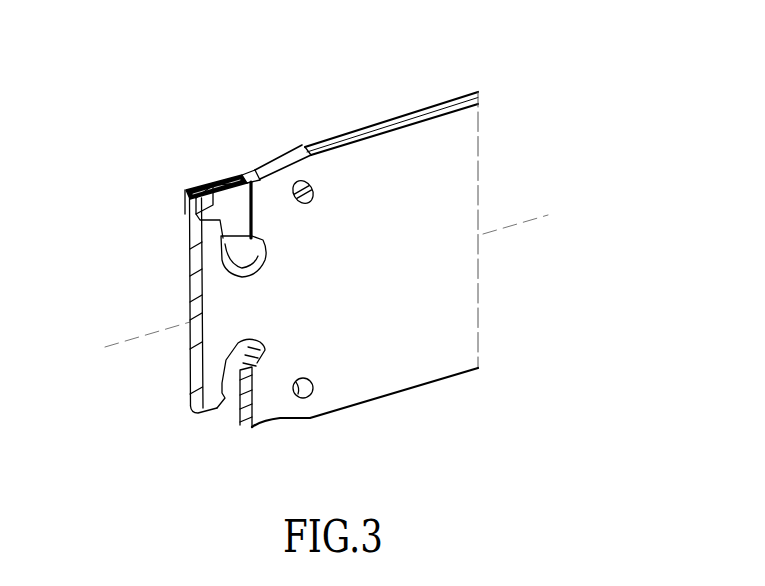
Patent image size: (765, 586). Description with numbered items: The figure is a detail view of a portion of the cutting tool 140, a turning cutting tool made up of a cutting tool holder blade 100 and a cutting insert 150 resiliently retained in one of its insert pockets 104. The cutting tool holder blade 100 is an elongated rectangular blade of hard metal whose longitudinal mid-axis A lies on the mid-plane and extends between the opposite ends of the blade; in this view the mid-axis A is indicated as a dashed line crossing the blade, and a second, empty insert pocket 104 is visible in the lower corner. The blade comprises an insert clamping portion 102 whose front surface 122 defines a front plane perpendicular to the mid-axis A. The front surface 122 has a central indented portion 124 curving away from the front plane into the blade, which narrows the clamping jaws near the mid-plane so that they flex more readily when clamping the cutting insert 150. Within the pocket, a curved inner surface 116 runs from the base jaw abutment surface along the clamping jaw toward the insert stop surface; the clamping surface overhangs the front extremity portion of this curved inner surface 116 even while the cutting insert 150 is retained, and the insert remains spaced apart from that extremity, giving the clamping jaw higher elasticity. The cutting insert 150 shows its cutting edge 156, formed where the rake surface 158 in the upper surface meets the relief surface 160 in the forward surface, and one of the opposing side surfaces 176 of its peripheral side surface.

The cutting tool holder blade 100 is at (412, 100).
The insert clamping portion 102 is at (118, 362).
The insert pocket 104 is at (178, 219).
The curved inner surface 116 is at (272, 268).
The front surface 122 is at (192, 276).
The central indented portion 124 is at (194, 322).
The cutting tool 140 is at (212, 177).
The cutting insert 150 is at (230, 152).
The cutting edge 156 is at (187, 188).
The rake surface 158 is at (205, 186).
The relief surface 160 is at (183, 205).
The side surfaces 176 is at (240, 198).
The longitudinal mid-axis A is at (528, 218).